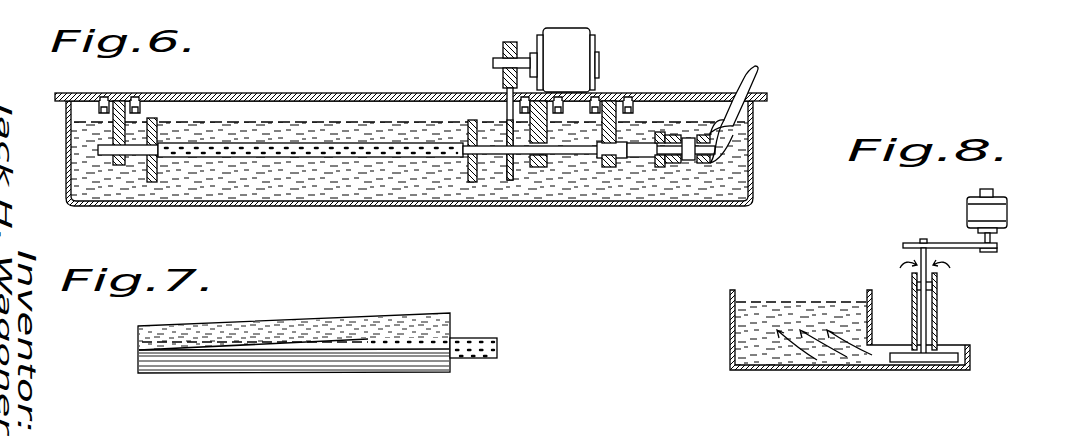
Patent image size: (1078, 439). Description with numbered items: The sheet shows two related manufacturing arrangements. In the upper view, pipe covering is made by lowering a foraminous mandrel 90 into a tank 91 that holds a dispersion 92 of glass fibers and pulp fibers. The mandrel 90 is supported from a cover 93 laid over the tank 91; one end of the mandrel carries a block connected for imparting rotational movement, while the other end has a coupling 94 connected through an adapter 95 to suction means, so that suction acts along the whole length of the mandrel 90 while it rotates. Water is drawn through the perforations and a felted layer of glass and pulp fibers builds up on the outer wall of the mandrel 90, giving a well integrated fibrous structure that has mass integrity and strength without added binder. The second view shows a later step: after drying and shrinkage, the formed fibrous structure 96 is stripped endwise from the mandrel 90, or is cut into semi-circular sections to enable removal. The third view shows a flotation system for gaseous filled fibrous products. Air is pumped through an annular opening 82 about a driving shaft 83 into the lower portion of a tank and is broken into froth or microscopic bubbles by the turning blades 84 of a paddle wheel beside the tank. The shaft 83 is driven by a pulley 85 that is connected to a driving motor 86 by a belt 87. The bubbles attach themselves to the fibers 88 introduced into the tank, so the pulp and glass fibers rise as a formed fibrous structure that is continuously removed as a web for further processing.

In FIG. 8, the annular opening 82 is at (912, 292).
In FIG. 8, the driving shaft 83 is at (926, 313).
In FIG. 8, the turning blades 84 is at (940, 370).
In FIG. 8, the pulley 85 is at (915, 213).
In FIG. 8, the driving motor 86 is at (998, 208).
In FIG. 8, the belt 87 is at (970, 250).
In FIG. 8, the fibers 88 is at (775, 298).
In FIG. 6, the foraminous mandrel 90 is at (305, 158).
In FIG. 7, the foraminous mandrel 90 is at (475, 339).
In FIG. 6, the tank 91 is at (452, 206).
In FIG. 6, the dispersion 92 is at (587, 183).
In FIG. 6, the cover 93 is at (393, 60).
In FIG. 6, the coupling 94 is at (528, 165).
In FIG. 6, the adapter 95 is at (630, 165).
In FIG. 7, the fibrous structure 96 is at (433, 280).